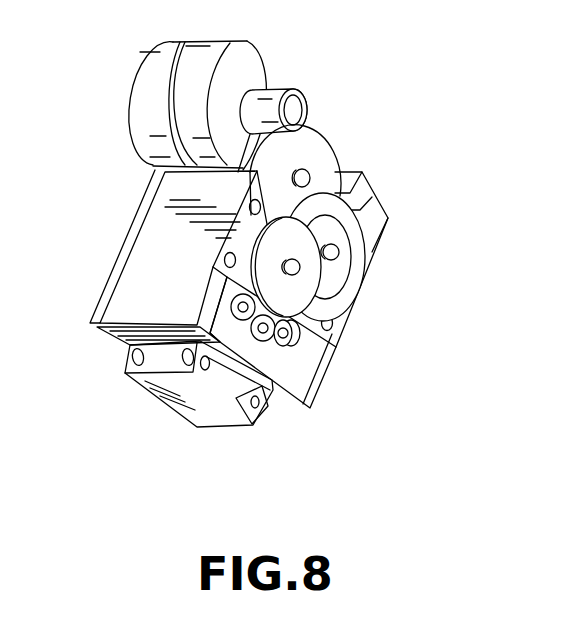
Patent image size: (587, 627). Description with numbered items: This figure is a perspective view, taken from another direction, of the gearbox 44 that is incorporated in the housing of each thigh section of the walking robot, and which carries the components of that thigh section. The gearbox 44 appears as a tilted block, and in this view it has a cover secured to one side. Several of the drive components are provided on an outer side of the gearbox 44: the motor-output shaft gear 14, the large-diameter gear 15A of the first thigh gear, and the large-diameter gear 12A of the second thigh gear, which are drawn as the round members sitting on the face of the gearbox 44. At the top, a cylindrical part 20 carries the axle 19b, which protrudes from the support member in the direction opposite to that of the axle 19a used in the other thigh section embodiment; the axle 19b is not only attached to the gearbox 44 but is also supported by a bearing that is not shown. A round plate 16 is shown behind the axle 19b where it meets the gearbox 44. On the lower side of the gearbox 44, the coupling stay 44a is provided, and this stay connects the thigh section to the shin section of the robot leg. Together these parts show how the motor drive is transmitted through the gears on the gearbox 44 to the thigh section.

The pulley/cylinder 20 is at (155, 80).
The axle 19b is at (362, 88).
The axle 19a is at (308, 102).
The disk plate 16 is at (320, 157).
The gearbox 44 is at (162, 250).
The coupling stay 44a is at (200, 410).
The large-diameter gear of the second thigh gear 12A is at (348, 280).
The large-diameter gear of the first thigh gear 15A is at (297, 293).
The motor-output shaft gear 14 is at (263, 347).